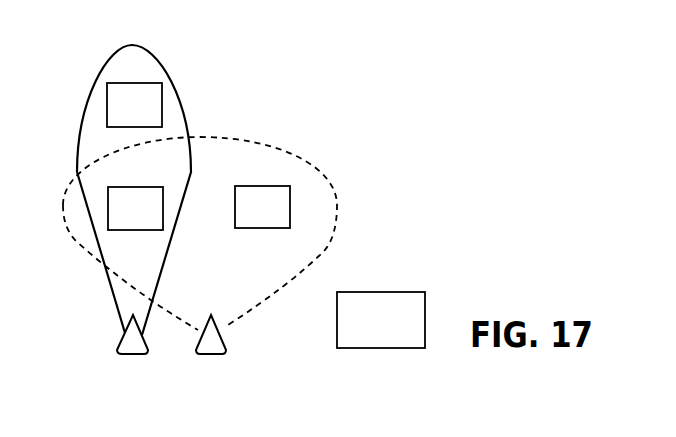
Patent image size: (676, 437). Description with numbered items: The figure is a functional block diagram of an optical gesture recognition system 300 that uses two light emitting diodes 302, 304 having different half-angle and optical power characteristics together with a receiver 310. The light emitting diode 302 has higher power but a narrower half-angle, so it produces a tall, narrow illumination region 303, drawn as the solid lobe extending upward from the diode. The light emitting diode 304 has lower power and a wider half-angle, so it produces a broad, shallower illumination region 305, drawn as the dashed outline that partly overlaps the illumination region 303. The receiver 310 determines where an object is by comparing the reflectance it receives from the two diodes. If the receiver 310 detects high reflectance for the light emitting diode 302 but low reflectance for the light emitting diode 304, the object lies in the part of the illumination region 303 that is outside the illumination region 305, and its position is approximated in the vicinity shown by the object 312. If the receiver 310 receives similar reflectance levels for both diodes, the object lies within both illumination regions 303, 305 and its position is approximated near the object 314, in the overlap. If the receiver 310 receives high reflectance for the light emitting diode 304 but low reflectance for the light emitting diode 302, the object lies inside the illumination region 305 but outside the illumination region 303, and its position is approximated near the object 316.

The optical gesture recognition system 300 is at (355, 74).
The light emitting diode 302 is at (131, 357).
The illumination region 303 is at (174, 80).
The light emitting diode 304 is at (211, 357).
The illumination region 305 is at (297, 158).
The receiver 310 is at (363, 330).
The object 312 is at (117, 116).
The object 314 is at (118, 220).
The object 316 is at (245, 219).